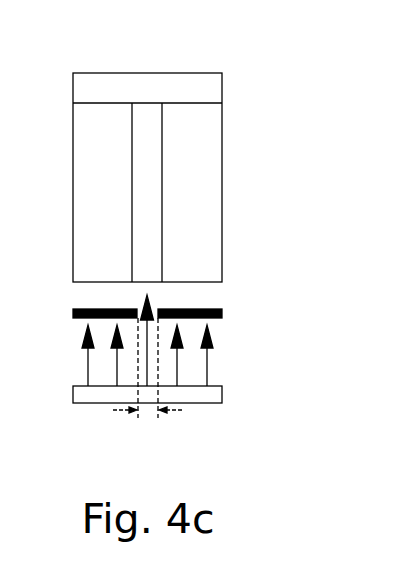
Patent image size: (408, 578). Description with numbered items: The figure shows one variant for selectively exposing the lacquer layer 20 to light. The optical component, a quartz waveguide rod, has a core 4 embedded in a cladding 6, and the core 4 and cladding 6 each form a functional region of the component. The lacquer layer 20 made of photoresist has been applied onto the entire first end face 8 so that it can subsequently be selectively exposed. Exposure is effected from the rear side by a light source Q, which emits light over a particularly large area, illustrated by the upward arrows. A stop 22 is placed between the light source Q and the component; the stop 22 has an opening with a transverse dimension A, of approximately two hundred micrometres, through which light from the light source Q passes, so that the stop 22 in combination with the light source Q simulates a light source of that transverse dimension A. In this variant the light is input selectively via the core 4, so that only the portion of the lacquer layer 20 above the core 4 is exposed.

The core 4 is at (163, 253).
The cladding 6 is at (222, 162).
The first end face 8 is at (192, 102).
The lacquer layer 20 is at (133, 90).
The stop 22 is at (222, 318).
The light source Q is at (72, 386).
The transverse dimension A is at (131, 410).